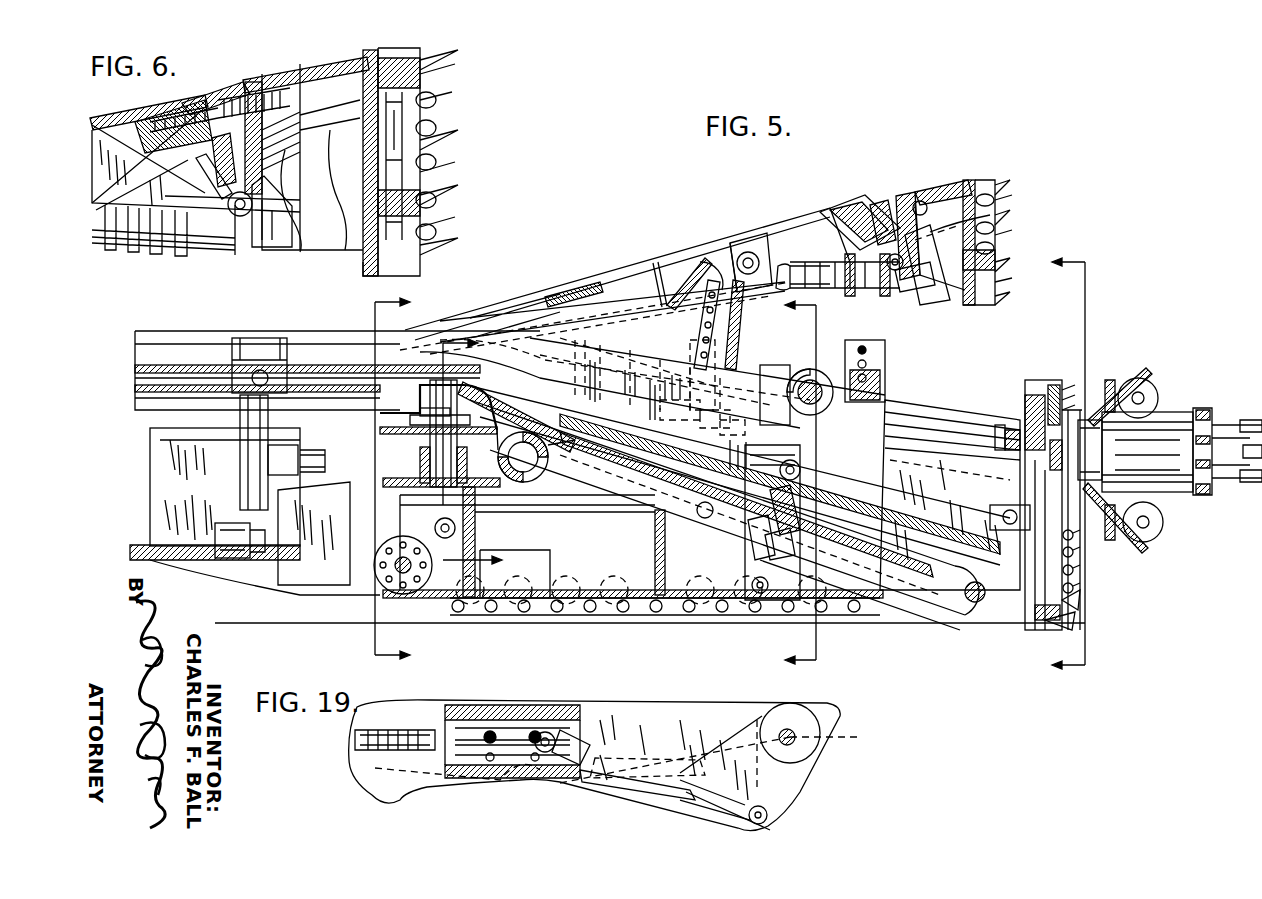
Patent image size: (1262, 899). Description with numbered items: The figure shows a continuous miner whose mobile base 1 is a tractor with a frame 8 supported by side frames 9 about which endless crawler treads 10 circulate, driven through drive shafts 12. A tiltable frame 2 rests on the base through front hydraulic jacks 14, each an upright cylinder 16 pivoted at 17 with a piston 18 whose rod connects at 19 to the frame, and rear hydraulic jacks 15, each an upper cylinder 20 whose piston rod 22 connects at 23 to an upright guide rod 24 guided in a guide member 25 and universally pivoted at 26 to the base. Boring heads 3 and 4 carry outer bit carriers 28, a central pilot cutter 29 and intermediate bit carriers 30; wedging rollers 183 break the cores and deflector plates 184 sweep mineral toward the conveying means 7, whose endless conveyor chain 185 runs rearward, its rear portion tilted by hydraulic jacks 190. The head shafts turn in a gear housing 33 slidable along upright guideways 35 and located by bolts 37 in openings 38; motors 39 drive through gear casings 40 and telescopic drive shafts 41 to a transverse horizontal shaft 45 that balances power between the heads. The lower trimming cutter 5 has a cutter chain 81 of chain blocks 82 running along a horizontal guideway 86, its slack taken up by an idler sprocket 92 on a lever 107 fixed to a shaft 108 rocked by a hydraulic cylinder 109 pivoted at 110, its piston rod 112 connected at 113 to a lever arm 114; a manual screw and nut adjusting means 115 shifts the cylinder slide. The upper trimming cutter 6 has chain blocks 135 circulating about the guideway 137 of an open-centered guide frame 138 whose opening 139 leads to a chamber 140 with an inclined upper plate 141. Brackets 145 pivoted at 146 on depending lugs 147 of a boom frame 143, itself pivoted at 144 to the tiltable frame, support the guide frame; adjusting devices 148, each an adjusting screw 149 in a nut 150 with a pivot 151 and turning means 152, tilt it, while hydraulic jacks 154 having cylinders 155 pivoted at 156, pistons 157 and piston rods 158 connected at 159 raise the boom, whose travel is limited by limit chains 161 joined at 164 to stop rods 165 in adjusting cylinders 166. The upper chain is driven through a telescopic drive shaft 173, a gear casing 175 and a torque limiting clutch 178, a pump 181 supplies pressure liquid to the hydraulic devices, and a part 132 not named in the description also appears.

In FIG. 5, the mobile base 1 is at (770, 610).
In FIG. 5, the tiltable frame 2 is at (648, 365).
In FIG. 5, the boring head 3 is at (1203, 498).
In FIG. 5, the boring head 4 is at (1062, 466).
In FIG. 5, the lower trimming cutter 5 is at (1082, 600).
In FIG. 6, the upper trimming cutter 6 is at (460, 60).
In FIG. 5, the upper trimming cutter 6 is at (1010, 182).
In FIG. 5, the conveying means 7 is at (925, 560).
In FIG. 5, the frame 8 is at (488, 652).
In FIG. 5, the side frames 9 is at (580, 602).
In FIG. 5, the endless crawler treads 10 is at (578, 652).
In FIG. 5, the drive shafts 12 is at (396, 572).
In FIG. 5, the front hydraulic jacks 14 is at (752, 540).
In FIG. 5, the rear hydraulic jacks 15 is at (440, 388).
In FIG. 5, the upright cylinder 16 is at (795, 555).
In FIG. 5, the pivotal mounting 17 is at (755, 592).
In FIG. 5, the piston 18 is at (800, 525).
In FIG. 5, the pivotal connection 19 is at (800, 470).
In FIG. 5, the upper cylinder 20 is at (498, 395).
In FIG. 5, the piston rod 22 is at (420, 435).
In FIG. 5, the pivotal connection 23 is at (420, 455).
In FIG. 5, the upright guide rod 24 is at (498, 458).
In FIG. 5, the guide member 25 is at (425, 487).
In FIG. 5, the universal pivotal mounting 26 is at (455, 530).
In FIG. 5, the outer cutter supports or bit carriers 28 is at (1192, 412).
In FIG. 5, the central pilot cutter 29 is at (1225, 432).
In FIG. 5, the intermediate cutter supports or bit carriers 30 is at (1210, 415).
In FIG. 5, the gear housing 33 is at (775, 365).
In FIG. 5, the upright guideways 35 is at (850, 345).
In FIG. 5, the bolts or screws 37 is at (866, 376).
In FIG. 5, the openings 38 is at (866, 349).
In FIG. 5, the motors 39 is at (348, 485).
In FIG. 5, the gear casings 40 is at (660, 362).
In FIG. 5, the telescopic drive shafts 41 is at (675, 385).
In FIG. 5, the transverse horizontal shaft 45 is at (815, 405).
In FIG. 5, the cutter chain 81 is at (1074, 580).
In FIG. 5, the chain blocks 82 is at (1062, 624).
In FIG. 5, the horizontal guideway 86 is at (1040, 618).
In FIG. 5, the take-up idler sprocket 92 is at (1062, 392).
In FIG. 5, the lever 107 is at (1040, 385).
In FIG. 19, the lever 107 is at (805, 770).
In FIG. 19, the shaft 108 is at (822, 735).
In FIG. 5, the hydraulic cylinder 109 is at (1000, 445).
In FIG. 19, the hydraulic cylinder 109 is at (560, 760).
In FIG. 5, the pivotal mounting 110 is at (1005, 435).
In FIG. 19, the piston rod 112 is at (655, 800).
In FIG. 19, the pivotal connection 113 is at (748, 822).
In FIG. 19, the lever arm 114 is at (770, 812).
In FIG. 19, the screw and nut type adjusting means 115 is at (425, 770).
In FIG. 5, the frame 132 is at (925, 425).
In FIG. 6, the chain blocks 135 is at (430, 192).
In FIG. 5, the chain blocks 135 is at (995, 262).
In FIG. 6, the guideway 137 is at (425, 68).
In FIG. 6, the guide frame 138 is at (360, 54).
In FIG. 5, the guide frame 138 is at (968, 178).
In FIG. 6, the opening 139 is at (438, 105).
In FIG. 5, the opening 139 is at (995, 233).
In FIG. 6, the chamber 140 is at (340, 170).
In FIG. 5, the chamber 140 is at (992, 216).
In FIG. 6, the inclined upper plate 141 is at (305, 130).
In FIG. 5, the inclined upper plate 141 is at (995, 203).
In FIG. 6, the boom frame 143 is at (95, 118).
In FIG. 5, the boom frame 143 is at (585, 268).
In FIG. 5, the pivot 144 is at (445, 320).
In FIG. 6, the brackets 145 is at (288, 230).
In FIG. 5, the brackets 145 is at (935, 270).
In FIG. 6, the pivot 146 is at (240, 218).
In FIG. 5, the pivot 146 is at (900, 270).
In FIG. 6, the depending lugs 147 is at (222, 215).
In FIG. 5, the depending lugs 147 is at (845, 272).
In FIG. 6, the adjusting devices 148 is at (198, 95).
In FIG. 5, the adjusting devices 148 is at (884, 204).
In FIG. 6, the adjusting screw 149 is at (224, 132).
In FIG. 6, the nut 150 is at (262, 88).
In FIG. 5, the nut 150 is at (922, 192).
In FIG. 6, the pivotal connection 151 is at (165, 165).
In FIG. 6, the turning means 152 is at (158, 138).
In FIG. 5, the turning means 152 is at (845, 215).
In FIG. 5, the hydraulic jacks 154 is at (682, 401).
In FIG. 5, the cylinders 155 is at (710, 425).
In FIG. 5, the pivotal mounting 156 is at (705, 518).
In FIG. 5, the pistons 157 is at (748, 441).
In FIG. 5, the piston rods 158 is at (733, 349).
In FIG. 5, the pivotal connection 159 is at (749, 250).
In FIG. 5, the limit chains 161 is at (708, 322).
In FIG. 5, the connection 164 is at (626, 270).
In FIG. 5, the stop rods 165 is at (560, 296).
In FIG. 5, the adjusting cylinders 166 is at (500, 315).
In FIG. 5, the universal telescopic drive shaft 173 is at (790, 282).
In FIG. 5, the gear casing 175 is at (905, 285).
In FIG. 5, the torque limiting clutch 178 is at (262, 338).
In FIG. 5, the pump 181 is at (238, 540).
In FIG. 5, the wedging rollers 183 is at (1150, 385).
In FIG. 5, the deflector plates 184 is at (1135, 372).
In FIG. 5, the endless conveyor chain 185 is at (930, 610).
In FIG. 5, the hydraulic jacks 190 is at (255, 428).